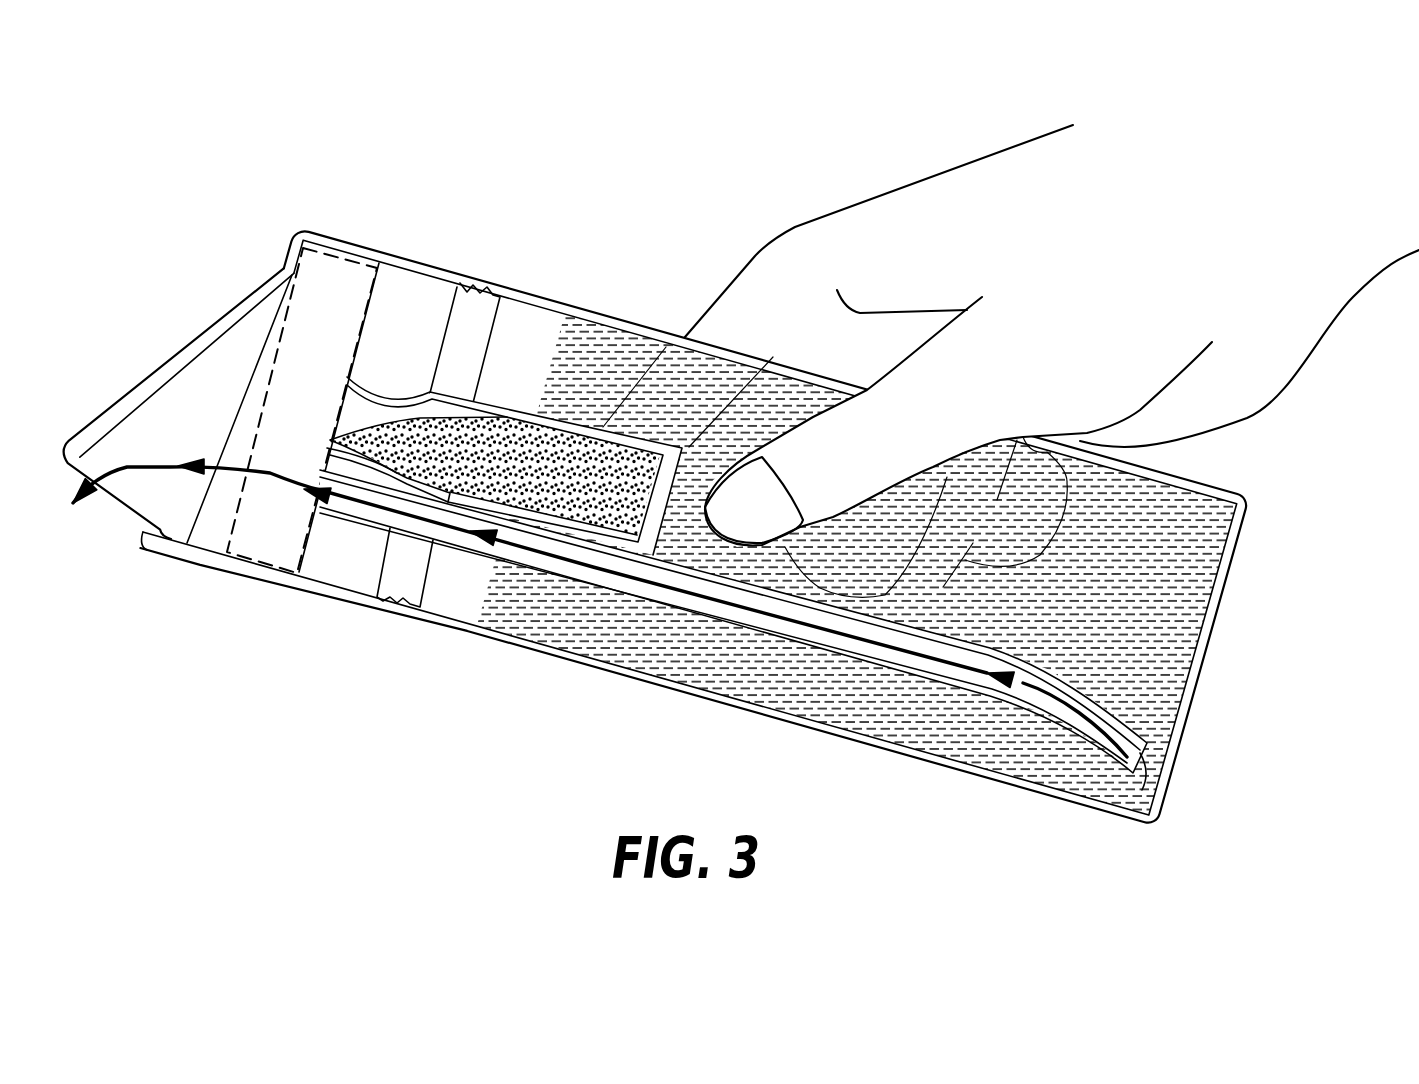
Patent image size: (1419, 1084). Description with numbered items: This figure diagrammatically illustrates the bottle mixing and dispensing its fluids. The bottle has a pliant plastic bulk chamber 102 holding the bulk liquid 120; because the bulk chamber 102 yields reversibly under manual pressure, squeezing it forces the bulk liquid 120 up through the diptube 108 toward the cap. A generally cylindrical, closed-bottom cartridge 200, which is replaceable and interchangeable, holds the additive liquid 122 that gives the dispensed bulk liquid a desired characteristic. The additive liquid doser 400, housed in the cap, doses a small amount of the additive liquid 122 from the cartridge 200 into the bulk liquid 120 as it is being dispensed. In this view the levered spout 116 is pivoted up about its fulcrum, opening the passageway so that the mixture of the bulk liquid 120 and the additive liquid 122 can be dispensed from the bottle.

The bulk chamber 102 is at (1008, 788).
The diptube 108 is at (607, 593).
The levered spout 116 is at (167, 358).
The bulk liquid 120 is at (1118, 602).
The additive liquid 122 is at (548, 477).
The cartridge 200 is at (504, 408).
The additive liquid doser 400 is at (287, 333).